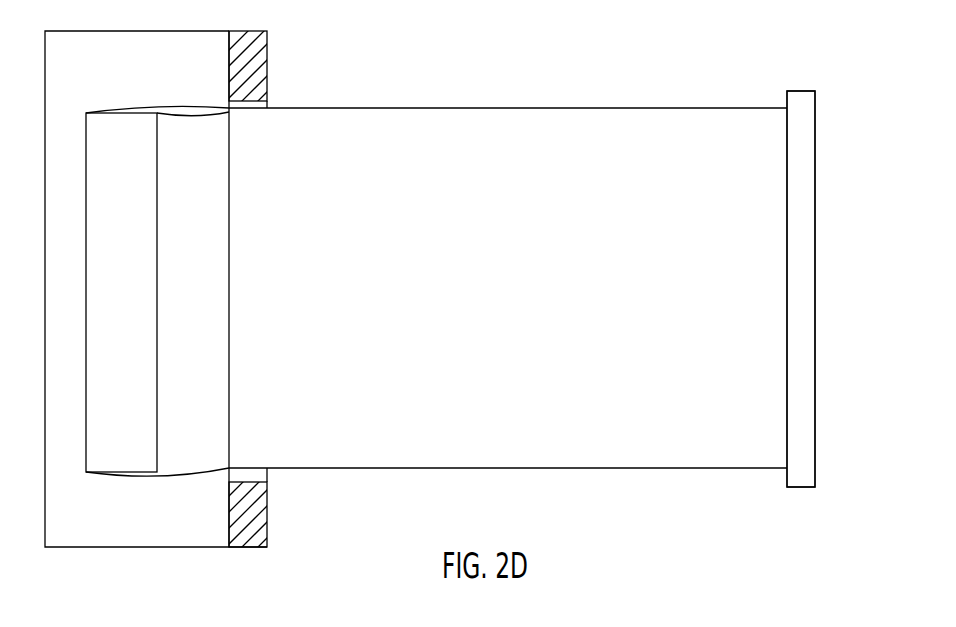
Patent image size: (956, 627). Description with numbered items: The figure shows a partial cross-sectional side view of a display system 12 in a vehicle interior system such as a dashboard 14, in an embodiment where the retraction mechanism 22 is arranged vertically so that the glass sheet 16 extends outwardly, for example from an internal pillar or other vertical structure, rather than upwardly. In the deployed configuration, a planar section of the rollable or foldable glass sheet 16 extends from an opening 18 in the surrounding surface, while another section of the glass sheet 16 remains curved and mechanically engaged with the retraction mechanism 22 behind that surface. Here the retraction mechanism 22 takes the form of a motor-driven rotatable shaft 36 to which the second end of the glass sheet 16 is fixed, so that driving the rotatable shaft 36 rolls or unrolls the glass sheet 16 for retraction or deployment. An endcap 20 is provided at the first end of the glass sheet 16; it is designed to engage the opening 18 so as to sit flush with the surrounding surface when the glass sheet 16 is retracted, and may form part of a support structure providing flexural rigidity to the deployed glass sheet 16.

The display system 12 is at (835, 96).
The dashboard 14 is at (252, 62).
The glass sheet 16 is at (617, 150).
The opening 18 is at (282, 477).
The endcap 20 is at (805, 261).
The retraction mechanism 22 is at (257, 368).
The rotatable shaft 36 is at (210, 182).